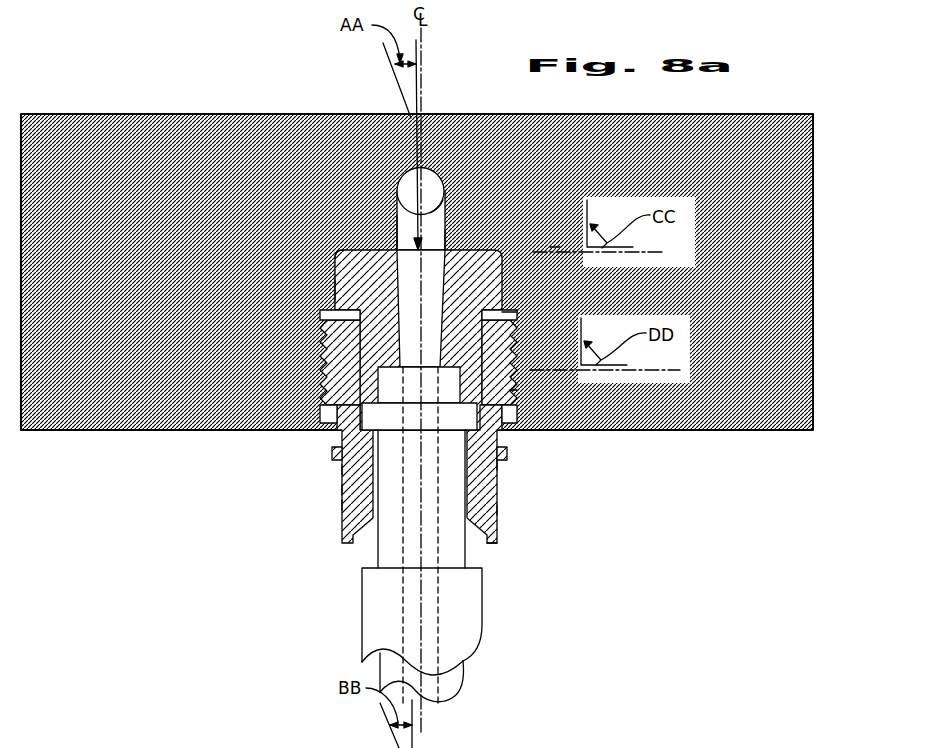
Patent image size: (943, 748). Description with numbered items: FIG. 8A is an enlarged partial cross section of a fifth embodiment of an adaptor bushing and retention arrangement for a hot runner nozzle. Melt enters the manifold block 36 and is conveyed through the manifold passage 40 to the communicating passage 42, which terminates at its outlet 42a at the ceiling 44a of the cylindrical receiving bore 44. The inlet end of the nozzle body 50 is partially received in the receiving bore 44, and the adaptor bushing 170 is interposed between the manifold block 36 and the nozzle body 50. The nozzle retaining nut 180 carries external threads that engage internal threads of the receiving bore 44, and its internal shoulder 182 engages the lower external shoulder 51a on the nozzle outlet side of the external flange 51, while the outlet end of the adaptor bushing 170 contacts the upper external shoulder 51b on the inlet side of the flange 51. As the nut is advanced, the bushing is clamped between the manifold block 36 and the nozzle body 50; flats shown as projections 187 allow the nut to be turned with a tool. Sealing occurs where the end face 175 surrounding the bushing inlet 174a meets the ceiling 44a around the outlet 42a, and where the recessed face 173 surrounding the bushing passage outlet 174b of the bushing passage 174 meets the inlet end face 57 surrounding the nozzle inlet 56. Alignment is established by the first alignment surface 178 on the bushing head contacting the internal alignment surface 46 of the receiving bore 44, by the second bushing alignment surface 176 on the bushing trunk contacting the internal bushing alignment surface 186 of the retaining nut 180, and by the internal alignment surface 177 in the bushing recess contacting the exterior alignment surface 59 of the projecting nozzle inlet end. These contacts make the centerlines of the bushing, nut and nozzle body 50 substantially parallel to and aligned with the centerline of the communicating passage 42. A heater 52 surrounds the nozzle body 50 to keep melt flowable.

The manifold block 36 is at (761, 153).
The manifold passage 40 is at (410, 182).
The communicating passage 42 is at (400, 188).
The communicating passage outlet 42a is at (443, 200).
The receiving bore 44 is at (337, 250).
The ceiling of receiving bore 44a is at (338, 250).
The internal alignment surface 46 is at (332, 290).
The nozzle body 50 is at (390, 543).
The external flange 51 is at (493, 535).
The lower external shoulder 51a is at (348, 488).
The upper external shoulder 51b is at (342, 470).
The heater 52 is at (385, 598).
The nozzle inlet 56 is at (490, 545).
The inlet end face 57 is at (497, 510).
The exterior alignment surface 59 is at (340, 367).
The adaptor bushing 170 is at (500, 440).
The recessed face 173 is at (497, 487).
The bushing passage 174 is at (399, 246).
The bushing inlet 174a is at (397, 228).
The bushing passage outlet 174b is at (340, 324).
The end face 175 is at (460, 248).
The second bushing alignment surface 176 is at (523, 390).
The internal alignment surface 177 is at (342, 407).
The first alignment surface 178 is at (553, 250).
The nozzle retaining nut 180 is at (336, 448).
The internal shoulder 182 is at (352, 505).
The internal bushing alignment surface 186 is at (514, 313).
The projections 187 is at (500, 465).